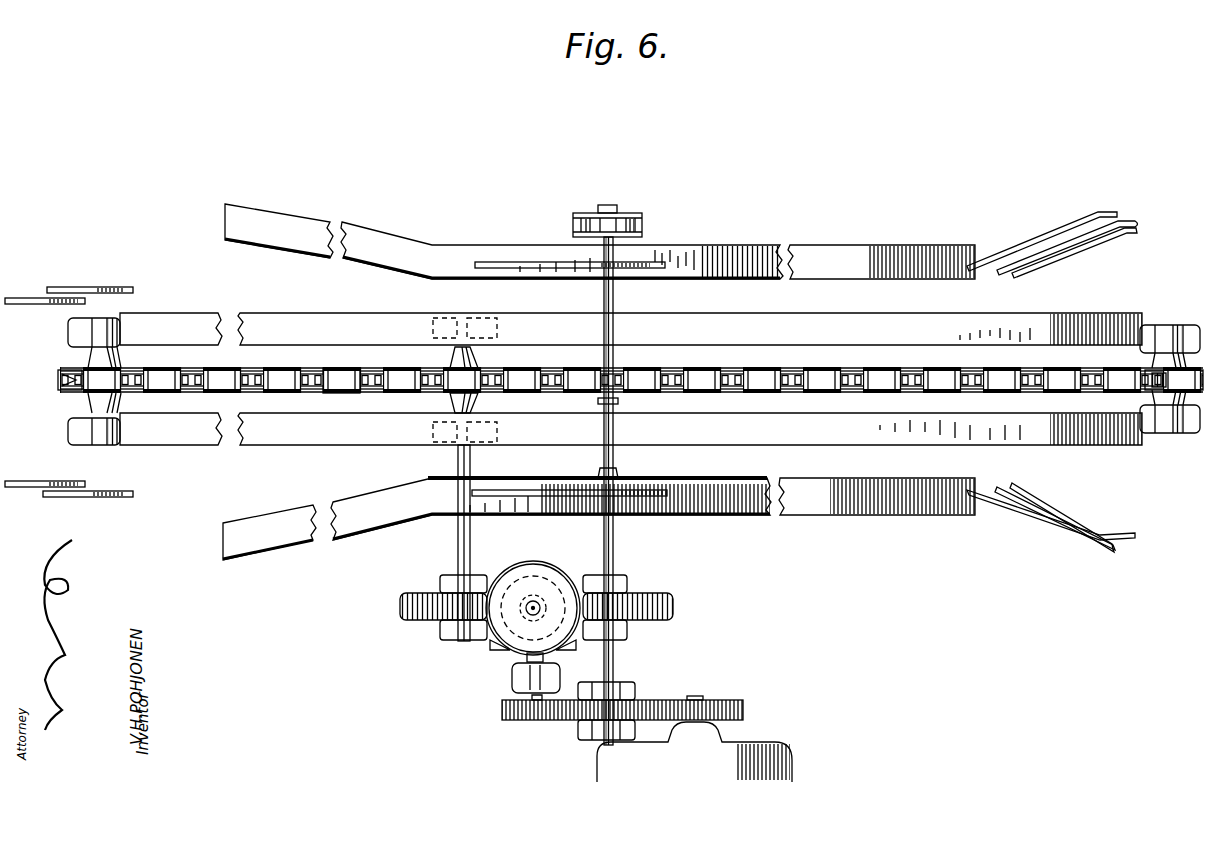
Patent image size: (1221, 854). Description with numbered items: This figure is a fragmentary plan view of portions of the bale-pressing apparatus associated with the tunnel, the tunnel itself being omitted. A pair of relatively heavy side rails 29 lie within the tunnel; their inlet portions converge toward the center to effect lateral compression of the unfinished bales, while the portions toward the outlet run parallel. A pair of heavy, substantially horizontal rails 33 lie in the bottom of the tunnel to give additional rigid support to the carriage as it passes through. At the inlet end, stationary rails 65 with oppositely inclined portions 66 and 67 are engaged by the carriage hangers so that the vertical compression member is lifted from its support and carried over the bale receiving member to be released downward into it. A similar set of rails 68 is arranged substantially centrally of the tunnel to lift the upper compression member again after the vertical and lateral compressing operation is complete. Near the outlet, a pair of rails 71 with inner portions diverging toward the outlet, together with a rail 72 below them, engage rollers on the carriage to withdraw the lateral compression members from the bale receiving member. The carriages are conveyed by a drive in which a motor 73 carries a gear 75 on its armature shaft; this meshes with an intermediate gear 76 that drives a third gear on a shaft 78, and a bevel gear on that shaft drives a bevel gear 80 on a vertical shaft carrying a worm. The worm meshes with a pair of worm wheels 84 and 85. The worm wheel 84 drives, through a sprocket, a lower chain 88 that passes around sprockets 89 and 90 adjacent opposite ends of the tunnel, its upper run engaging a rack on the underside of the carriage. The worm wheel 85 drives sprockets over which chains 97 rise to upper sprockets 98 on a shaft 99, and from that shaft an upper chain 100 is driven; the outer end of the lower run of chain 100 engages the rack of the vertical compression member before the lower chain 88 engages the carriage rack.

The side rails 29 is at (728, 248).
The bottom rails 33 is at (634, 379).
The stationary rails 65 is at (78, 287).
The inclined portion 66 is at (42, 304).
The inclined portion 67 is at (131, 290).
The rails 68 is at (654, 268).
The rails 71 is at (1103, 212).
The rail 72 is at (1072, 243).
The motor 73 is at (780, 753).
The gear 75 is at (735, 700).
The intermediate gear 76 is at (646, 702).
The shaft 78 is at (614, 570).
The bevel gear 80 is at (535, 575).
The worm wheel 84 is at (400, 608).
The worm wheel 85 is at (673, 606).
The lower chain 88 is at (930, 368).
The sprocket 89 is at (63, 369).
The sprocket 90 is at (1136, 376).
The chains 97 is at (640, 222).
The upper sprockets 98 is at (618, 212).
The shaft 99 is at (614, 470).
The upper chain 100 is at (370, 368).